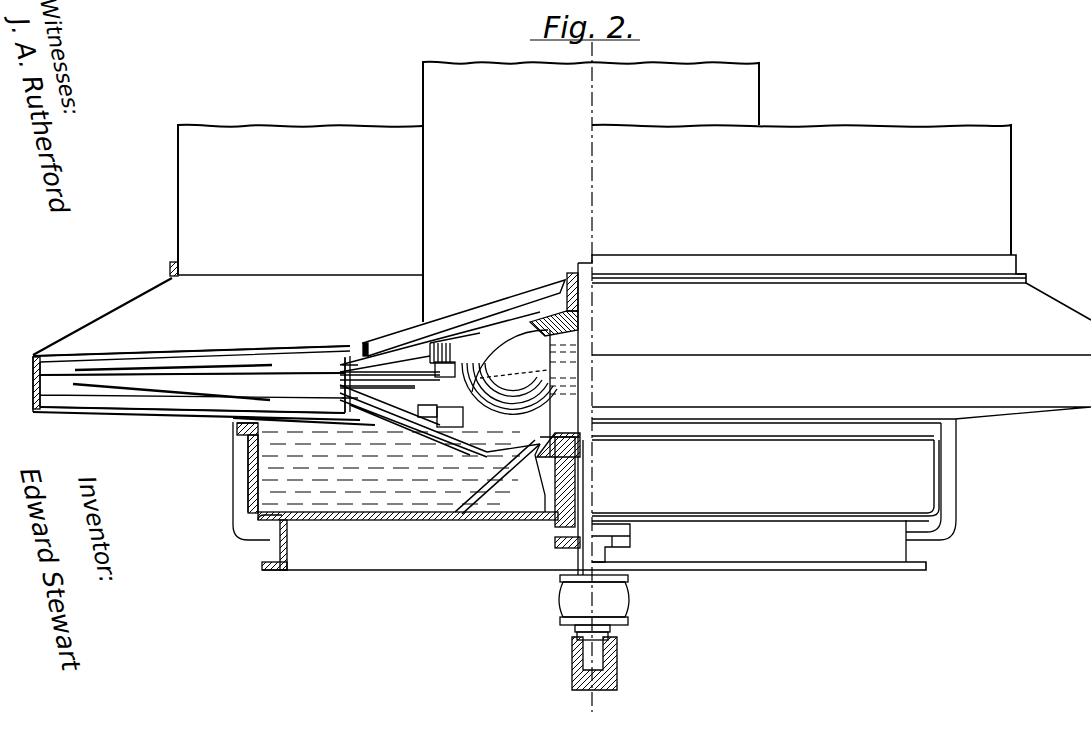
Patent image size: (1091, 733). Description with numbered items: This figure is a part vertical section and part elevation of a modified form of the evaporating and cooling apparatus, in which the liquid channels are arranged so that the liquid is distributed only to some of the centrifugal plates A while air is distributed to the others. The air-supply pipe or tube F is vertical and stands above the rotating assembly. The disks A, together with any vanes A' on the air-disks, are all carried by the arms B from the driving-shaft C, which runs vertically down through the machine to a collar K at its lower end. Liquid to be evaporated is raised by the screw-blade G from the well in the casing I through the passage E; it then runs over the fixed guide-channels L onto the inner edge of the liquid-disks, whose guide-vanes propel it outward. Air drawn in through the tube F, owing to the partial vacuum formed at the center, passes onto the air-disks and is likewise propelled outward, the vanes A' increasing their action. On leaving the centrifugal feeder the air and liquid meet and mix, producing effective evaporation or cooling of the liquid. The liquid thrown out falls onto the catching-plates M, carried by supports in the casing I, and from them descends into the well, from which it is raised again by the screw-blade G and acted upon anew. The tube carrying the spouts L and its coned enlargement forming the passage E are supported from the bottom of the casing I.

The air-supply pipe or tube F is at (591, 192).
The arms B is at (452, 326).
The driving-shaft C is at (604, 320).
The casing I is at (562, 449).
The catching-plates M is at (172, 375).
The centrifugal plates A is at (340, 383).
The vanes A' is at (410, 360).
The guide-channels L is at (509, 393).
The screw-blade G is at (558, 432).
The passage E is at (513, 446).
The shaft collar K is at (594, 632).